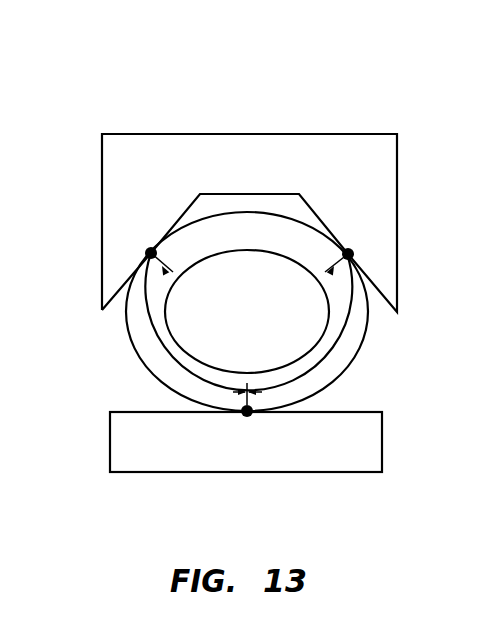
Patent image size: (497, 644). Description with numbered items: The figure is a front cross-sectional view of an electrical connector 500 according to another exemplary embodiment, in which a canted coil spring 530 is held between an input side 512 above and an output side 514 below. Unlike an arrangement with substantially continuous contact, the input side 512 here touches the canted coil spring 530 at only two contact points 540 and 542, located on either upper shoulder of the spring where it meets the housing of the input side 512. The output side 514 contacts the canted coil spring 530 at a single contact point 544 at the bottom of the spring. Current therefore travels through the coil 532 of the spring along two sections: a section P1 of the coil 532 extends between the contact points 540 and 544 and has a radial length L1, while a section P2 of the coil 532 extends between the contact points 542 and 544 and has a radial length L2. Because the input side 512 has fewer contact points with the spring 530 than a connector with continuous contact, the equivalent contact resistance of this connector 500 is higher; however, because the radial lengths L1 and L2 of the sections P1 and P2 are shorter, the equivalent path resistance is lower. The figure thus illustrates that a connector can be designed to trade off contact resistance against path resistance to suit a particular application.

The electrical connector 500 is at (316, 87).
The input side 512 is at (124, 182).
The output side 514 is at (150, 458).
The canted coil spring 530 is at (345, 357).
The coil 532 is at (327, 378).
The contact point 540 is at (151, 253).
The contact point 542 is at (348, 254).
The contact point 544 is at (247, 411).
The radial length L1 is at (150, 329).
The radial length L2 is at (345, 345).
The section P1 is at (152, 373).
The section P2 is at (371, 323).